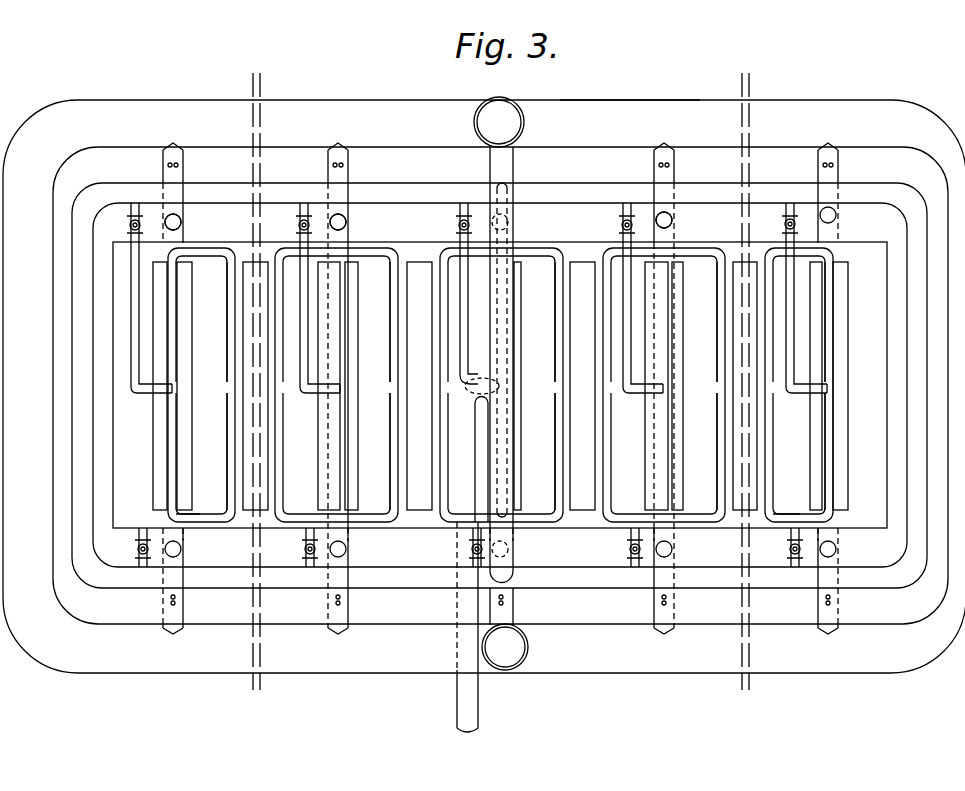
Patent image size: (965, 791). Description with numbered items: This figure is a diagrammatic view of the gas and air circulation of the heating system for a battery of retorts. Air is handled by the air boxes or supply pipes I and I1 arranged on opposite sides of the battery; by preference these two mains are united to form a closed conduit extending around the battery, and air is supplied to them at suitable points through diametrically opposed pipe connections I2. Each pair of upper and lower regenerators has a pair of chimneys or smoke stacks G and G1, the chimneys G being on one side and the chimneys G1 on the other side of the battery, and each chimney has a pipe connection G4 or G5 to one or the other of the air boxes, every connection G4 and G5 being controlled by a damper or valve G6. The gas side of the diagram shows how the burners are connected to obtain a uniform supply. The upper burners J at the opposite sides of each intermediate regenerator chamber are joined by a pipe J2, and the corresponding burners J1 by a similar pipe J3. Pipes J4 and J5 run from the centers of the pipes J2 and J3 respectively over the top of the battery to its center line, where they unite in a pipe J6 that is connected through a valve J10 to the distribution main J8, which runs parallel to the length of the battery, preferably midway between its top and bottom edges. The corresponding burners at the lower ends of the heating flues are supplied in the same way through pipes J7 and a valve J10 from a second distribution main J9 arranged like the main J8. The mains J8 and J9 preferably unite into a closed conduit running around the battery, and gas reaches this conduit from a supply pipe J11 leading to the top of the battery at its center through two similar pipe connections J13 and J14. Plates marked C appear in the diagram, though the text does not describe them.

The air box or supply pipe I is at (622, 99).
The air box or supply pipe I1 is at (655, 673).
The pipe connection I2 is at (508, 113).
The chimney or smoke stack G is at (165, 226).
The chimney or smoke stack G1 is at (168, 557).
The pipe connection G4 is at (182, 222).
The pipe connection G5 is at (181, 556).
The damper or valve G6 is at (184, 166).
The upper burner J is at (227, 360).
The burner J1 is at (228, 430).
The pipe J2 is at (212, 252).
The pipe J3 is at (170, 520).
The pipe J4 is at (176, 333).
The pipe J5 is at (182, 480).
The pipe J6 is at (130, 342).
The pipe J7 is at (137, 553).
The distribution main J8 is at (621, 189).
The distribution main J9 is at (587, 588).
The valve J10 is at (129, 223).
The supply pipe J11 is at (455, 648).
The pipe connection J13 is at (508, 262).
The pipe connection J14 is at (508, 326).
The wide plates C is at (501, 386).